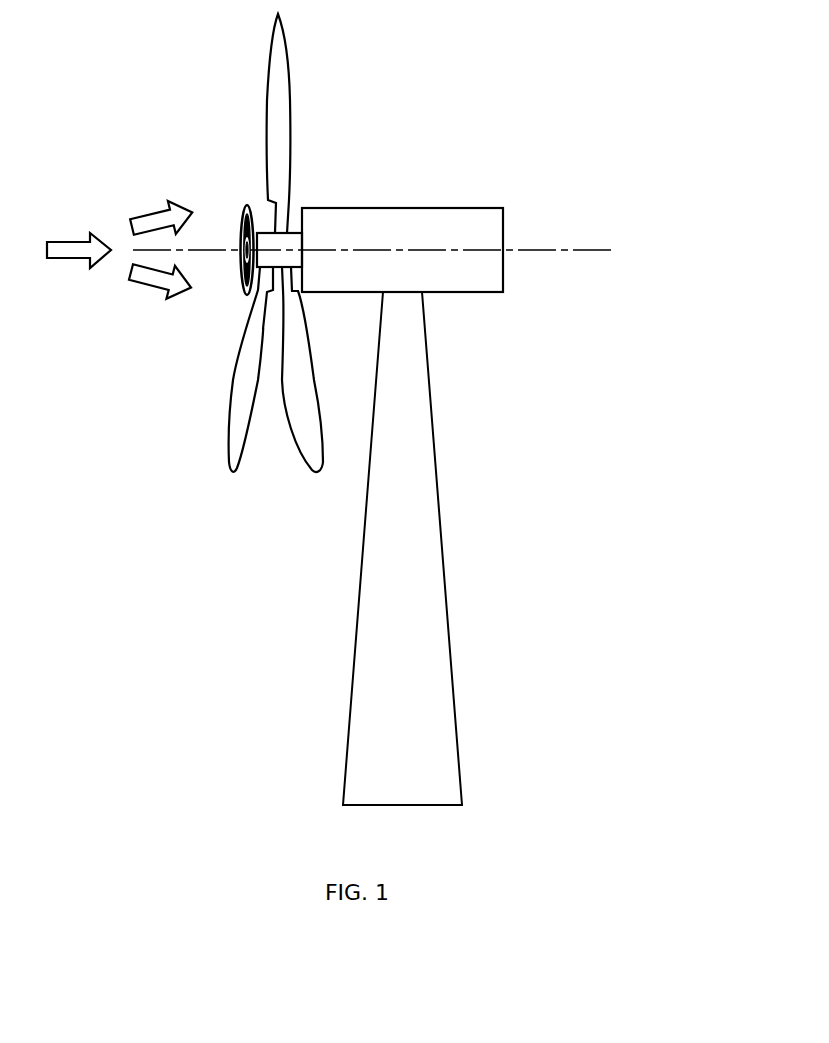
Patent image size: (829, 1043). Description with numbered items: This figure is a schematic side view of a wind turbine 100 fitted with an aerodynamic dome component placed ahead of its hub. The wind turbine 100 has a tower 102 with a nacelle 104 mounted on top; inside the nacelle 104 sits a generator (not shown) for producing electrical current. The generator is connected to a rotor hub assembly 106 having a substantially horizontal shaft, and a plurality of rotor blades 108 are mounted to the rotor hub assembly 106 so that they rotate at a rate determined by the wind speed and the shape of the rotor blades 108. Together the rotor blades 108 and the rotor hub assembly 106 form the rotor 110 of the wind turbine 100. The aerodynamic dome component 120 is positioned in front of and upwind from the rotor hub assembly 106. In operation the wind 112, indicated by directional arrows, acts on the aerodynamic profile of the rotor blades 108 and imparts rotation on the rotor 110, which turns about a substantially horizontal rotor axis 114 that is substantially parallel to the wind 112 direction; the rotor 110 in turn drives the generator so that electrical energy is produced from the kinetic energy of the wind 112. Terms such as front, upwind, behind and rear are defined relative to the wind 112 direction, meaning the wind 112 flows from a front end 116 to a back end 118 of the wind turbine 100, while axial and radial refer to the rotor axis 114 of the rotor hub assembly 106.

The wind turbine 100 is at (347, 409).
The tower 102 is at (441, 530).
The nacelle 104 is at (504, 221).
The rotor hub assembly 106 is at (288, 240).
The rotor blades 108 is at (272, 128).
The rotor 110 is at (306, 146).
The wind 112 is at (69, 259).
The rotor axis 114 is at (596, 253).
The front end 116 is at (157, 176).
The back end 118 is at (524, 293).
The aerodynamic dome component 120 is at (241, 272).